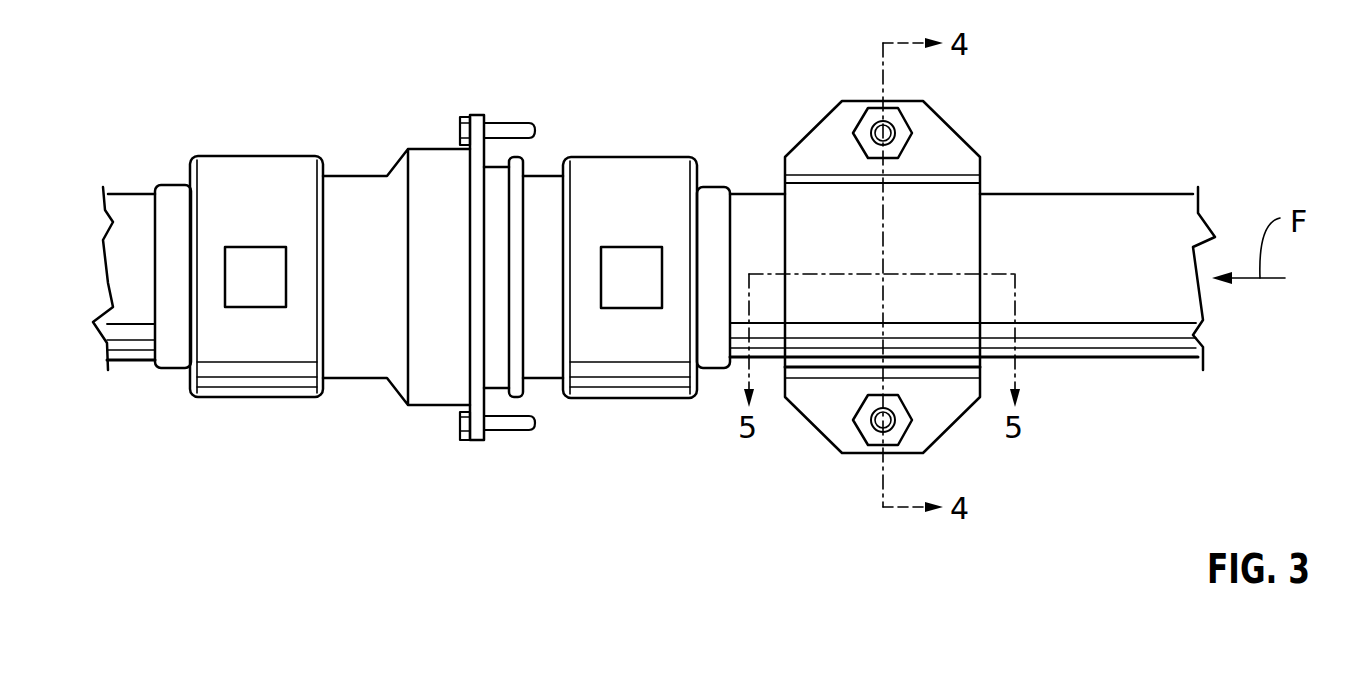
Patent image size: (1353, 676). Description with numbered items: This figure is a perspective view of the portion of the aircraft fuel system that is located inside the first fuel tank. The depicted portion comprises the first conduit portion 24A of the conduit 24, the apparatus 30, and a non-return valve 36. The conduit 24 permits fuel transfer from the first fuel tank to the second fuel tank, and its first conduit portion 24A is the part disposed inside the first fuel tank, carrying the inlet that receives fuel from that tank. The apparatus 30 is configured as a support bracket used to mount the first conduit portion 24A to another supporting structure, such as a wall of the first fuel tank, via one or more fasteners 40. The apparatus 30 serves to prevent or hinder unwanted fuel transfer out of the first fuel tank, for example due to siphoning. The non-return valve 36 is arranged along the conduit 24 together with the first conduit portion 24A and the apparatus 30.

The conduit 24 is at (654, 231).
The first conduit portion 24A is at (1057, 227).
The apparatus 30 is at (833, 208).
The non-return valve 36 is at (418, 102).
The fasteners 40 is at (872, 128).